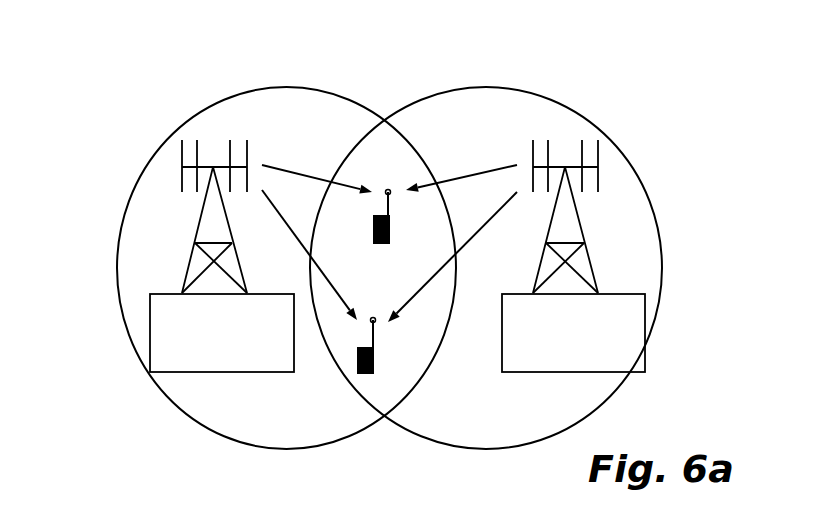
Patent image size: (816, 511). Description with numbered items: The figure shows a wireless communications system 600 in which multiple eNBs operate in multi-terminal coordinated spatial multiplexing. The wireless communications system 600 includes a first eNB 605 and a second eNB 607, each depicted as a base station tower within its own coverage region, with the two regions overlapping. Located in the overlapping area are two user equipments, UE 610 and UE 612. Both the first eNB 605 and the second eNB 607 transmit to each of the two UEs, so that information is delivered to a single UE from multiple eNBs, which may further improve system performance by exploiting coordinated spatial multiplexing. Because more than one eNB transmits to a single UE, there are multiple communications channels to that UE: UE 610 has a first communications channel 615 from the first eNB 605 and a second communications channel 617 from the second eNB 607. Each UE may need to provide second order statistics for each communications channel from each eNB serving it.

The wireless communications system 600 is at (77, 51).
The first eNB 605 is at (149, 353).
The second eNB 607 is at (645, 366).
The UE 610 is at (390, 240).
The UE 612 is at (374, 368).
The first communications channel 615 is at (284, 170).
The second communications channel 617 is at (488, 171).